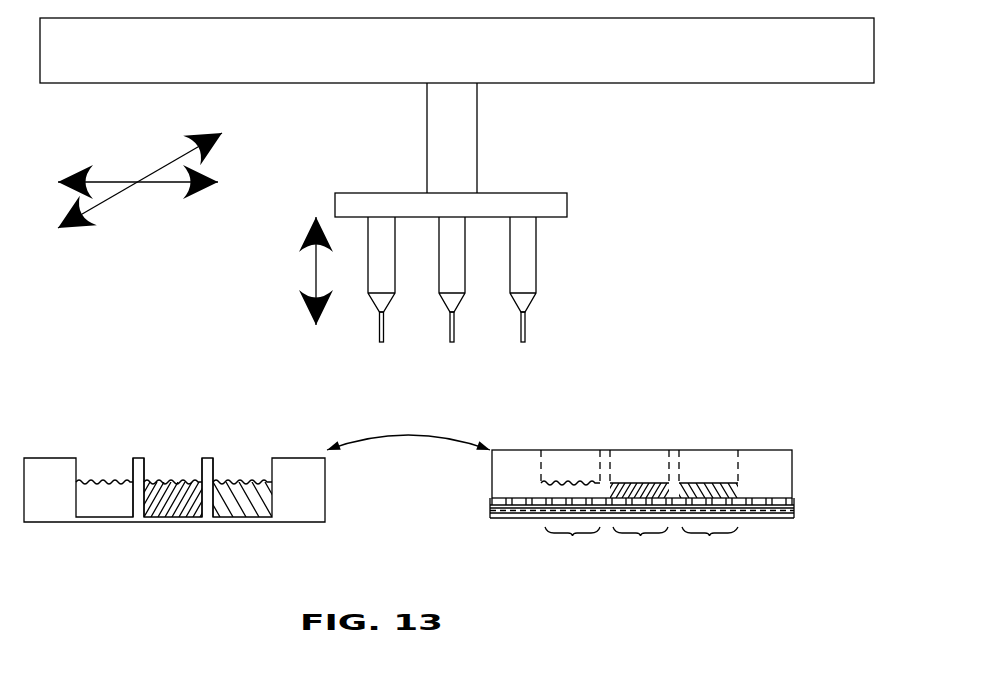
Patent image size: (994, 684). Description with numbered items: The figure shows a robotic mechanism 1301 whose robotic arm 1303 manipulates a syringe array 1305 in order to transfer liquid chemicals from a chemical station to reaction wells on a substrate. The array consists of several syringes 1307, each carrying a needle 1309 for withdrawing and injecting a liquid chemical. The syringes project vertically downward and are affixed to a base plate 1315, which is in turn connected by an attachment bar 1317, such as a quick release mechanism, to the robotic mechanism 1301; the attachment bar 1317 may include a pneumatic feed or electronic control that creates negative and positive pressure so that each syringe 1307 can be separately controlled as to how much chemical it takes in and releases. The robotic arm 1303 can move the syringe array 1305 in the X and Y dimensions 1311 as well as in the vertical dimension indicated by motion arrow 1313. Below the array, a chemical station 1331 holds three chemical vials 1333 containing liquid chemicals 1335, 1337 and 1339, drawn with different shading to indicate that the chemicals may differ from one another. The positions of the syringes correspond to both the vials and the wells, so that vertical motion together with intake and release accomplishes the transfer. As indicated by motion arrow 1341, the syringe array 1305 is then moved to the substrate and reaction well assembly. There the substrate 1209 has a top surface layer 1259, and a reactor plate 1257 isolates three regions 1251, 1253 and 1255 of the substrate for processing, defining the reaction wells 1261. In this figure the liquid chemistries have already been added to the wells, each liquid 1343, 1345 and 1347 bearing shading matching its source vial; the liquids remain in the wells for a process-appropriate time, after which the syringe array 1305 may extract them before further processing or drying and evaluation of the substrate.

The robotic mechanism 1301 is at (457, 203).
The robotic arm 1303 is at (138, 85).
The syringe array 1305 is at (481, 235).
The syringe 1307 is at (377, 305).
The needle 1309 is at (447, 325).
The X and Y dimensions 1311 is at (175, 183).
The motion arrow 1313 is at (316, 263).
The base plate 1315 is at (383, 193).
The attachment bar 1317 is at (425, 143).
The chemical station 1331 is at (174, 489).
The chemical vials 1333 is at (210, 520).
The liquid chemical 1335 is at (101, 482).
The liquid chemical 1337 is at (172, 482).
The liquid chemical 1339 is at (230, 483).
The motion arrow 1341 is at (448, 433).
The reactor plate 1257 is at (624, 501).
The top surface layer 1259 is at (792, 498).
The reaction wells 1261 is at (582, 457).
The substrate 1209 is at (492, 517).
The first region 1251 is at (571, 546).
The second region 1253 is at (640, 546).
The third region 1255 is at (710, 546).
The liquid 1343 is at (546, 495).
The liquid 1345 is at (631, 494).
The liquid 1347 is at (706, 494).